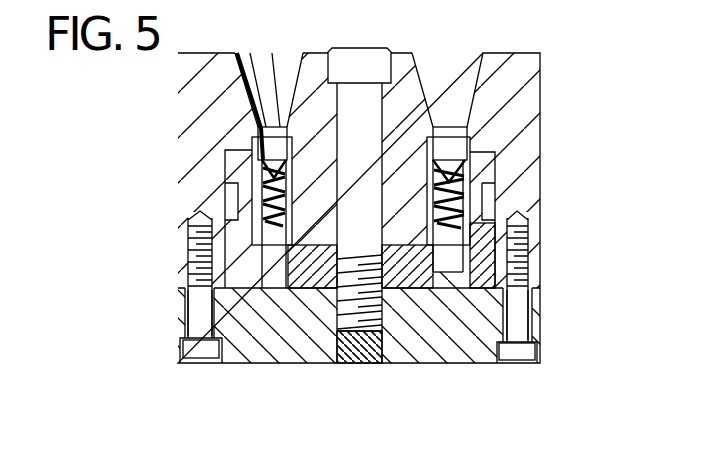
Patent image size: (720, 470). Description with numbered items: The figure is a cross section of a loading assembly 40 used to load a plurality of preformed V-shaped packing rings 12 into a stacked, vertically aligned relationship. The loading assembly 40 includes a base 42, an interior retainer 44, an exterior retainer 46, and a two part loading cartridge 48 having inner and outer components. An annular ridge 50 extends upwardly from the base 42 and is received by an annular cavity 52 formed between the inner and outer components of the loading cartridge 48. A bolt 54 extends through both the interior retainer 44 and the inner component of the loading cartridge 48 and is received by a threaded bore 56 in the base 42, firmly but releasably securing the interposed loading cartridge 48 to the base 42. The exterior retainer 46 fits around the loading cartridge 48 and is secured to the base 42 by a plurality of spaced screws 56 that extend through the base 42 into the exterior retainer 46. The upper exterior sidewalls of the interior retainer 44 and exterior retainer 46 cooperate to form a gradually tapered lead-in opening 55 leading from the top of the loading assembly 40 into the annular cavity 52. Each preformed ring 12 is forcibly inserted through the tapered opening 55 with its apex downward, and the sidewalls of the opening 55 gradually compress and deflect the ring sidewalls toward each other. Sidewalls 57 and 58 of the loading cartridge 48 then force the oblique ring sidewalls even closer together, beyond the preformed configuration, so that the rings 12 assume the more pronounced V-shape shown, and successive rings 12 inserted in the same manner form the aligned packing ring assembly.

The preformed packing ring 12 is at (468, 170).
The loading assembly 40 is at (577, 125).
The base 42 is at (418, 325).
The interior retainer 44 is at (405, 95).
The exterior retainer 46 is at (192, 110).
The two part loading cartridge 48 is at (303, 276).
The annular ridge 50 is at (262, 278).
The annular cavity 52 is at (450, 153).
The bolt 54 is at (355, 107).
The tapered lead-in opening 55 is at (254, 75).
The threaded bore 56 is at (203, 320).
The sidewall of the loading cartridge 57 is at (252, 237).
The sidewall of the loading cartridge 58 is at (468, 236).